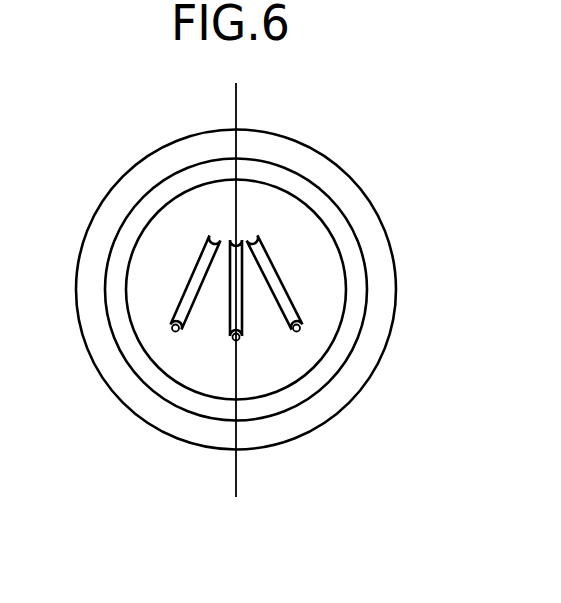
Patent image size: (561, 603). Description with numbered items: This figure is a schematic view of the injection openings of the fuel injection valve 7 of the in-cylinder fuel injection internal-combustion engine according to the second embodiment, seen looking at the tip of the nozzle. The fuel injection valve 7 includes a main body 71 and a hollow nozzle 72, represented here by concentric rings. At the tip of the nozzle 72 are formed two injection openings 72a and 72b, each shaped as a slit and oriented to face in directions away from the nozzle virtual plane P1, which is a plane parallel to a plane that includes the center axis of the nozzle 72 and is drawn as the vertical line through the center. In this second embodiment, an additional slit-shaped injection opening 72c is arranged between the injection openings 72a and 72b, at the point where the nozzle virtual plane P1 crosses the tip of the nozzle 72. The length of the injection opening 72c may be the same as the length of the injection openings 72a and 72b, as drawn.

The fuel injection valve 7 is at (406, 110).
The main body 71 is at (382, 222).
The nozzle 72 is at (148, 218).
The injection opening 72a is at (173, 332).
The injection opening 72b is at (296, 333).
The injection opening 72c is at (235, 342).
The nozzle virtual plane P1 is at (234, 477).